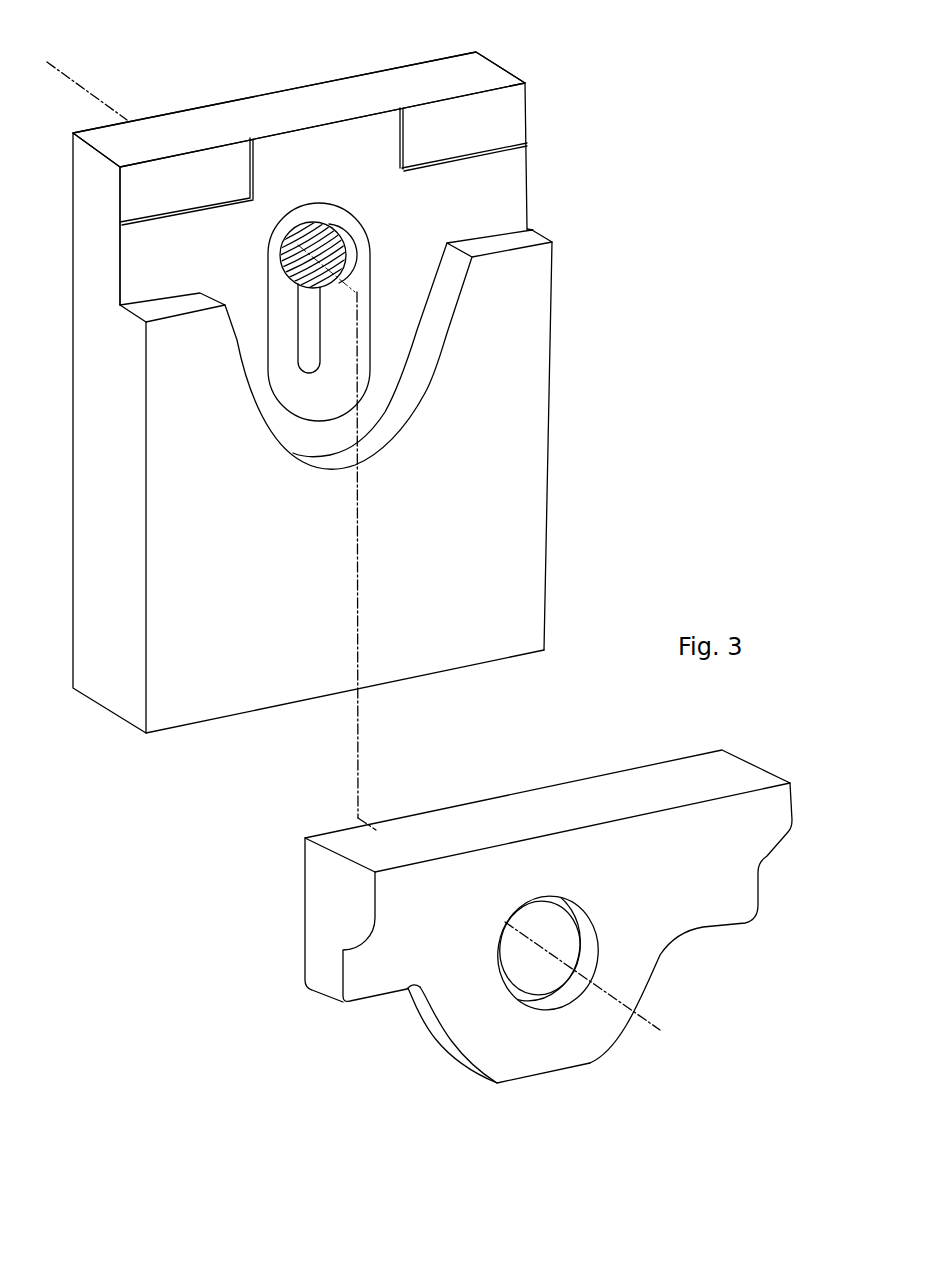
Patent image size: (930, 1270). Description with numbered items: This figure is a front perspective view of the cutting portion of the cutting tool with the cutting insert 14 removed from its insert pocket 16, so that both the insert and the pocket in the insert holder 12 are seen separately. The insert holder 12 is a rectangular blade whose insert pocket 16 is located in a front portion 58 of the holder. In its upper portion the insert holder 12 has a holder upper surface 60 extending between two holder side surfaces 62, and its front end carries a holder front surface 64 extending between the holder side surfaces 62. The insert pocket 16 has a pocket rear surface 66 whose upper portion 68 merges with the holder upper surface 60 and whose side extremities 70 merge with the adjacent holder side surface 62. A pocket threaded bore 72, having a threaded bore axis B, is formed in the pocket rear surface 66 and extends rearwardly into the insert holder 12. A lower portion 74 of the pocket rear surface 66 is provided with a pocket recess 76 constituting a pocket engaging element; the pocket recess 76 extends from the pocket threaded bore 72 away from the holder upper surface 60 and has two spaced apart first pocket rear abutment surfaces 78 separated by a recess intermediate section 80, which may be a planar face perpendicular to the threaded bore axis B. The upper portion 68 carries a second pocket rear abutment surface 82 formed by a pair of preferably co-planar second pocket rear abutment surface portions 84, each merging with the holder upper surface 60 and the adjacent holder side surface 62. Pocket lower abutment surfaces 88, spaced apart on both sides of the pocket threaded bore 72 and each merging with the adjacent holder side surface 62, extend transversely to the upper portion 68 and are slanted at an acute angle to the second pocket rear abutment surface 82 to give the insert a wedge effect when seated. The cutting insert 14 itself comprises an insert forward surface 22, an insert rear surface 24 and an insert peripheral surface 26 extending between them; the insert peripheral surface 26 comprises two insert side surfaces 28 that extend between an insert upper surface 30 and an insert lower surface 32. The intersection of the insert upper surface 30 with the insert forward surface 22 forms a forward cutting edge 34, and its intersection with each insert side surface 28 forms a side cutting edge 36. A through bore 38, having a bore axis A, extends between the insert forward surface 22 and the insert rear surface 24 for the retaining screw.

The insert holder 12 is at (612, 58).
The cutting insert 14 is at (247, 917).
The insert pocket 16 is at (295, 152).
The insert forward surface 22 is at (713, 898).
The insert rear surface 24 is at (280, 870).
The insert peripheral surface 26 is at (326, 1029).
The insert side surfaces 28 is at (342, 906).
The insert upper surface 30 is at (613, 798).
The insert lower surface 32 is at (392, 1063).
The forward cutting edge 34 is at (748, 791).
The side cutting edge 36 is at (330, 843).
The through bore 38 is at (528, 972).
The front portion 58 is at (580, 187).
The holder upper surface 60 is at (477, 72).
The holder side surfaces 62 is at (86, 182).
The holder front surface 64 is at (535, 310).
The pocket rear surface 66 is at (490, 166).
The upper portion 68 is at (350, 136).
The side extremities 70 is at (130, 248).
The pocket threaded bore 72 is at (318, 225).
The lower portion 74 is at (371, 386).
The pocket recess 76 is at (330, 312).
The first pocket rear abutment surfaces 78 is at (282, 332).
The recess intermediate section 80 is at (305, 358).
The second pocket rear abutment surface 82 is at (430, 137).
The second pocket rear abutment surface portions 84 is at (146, 189).
The pocket lower abutment surfaces 88 is at (152, 313).
The bore axis A is at (653, 1023).
The threaded bore axis B is at (67, 80).